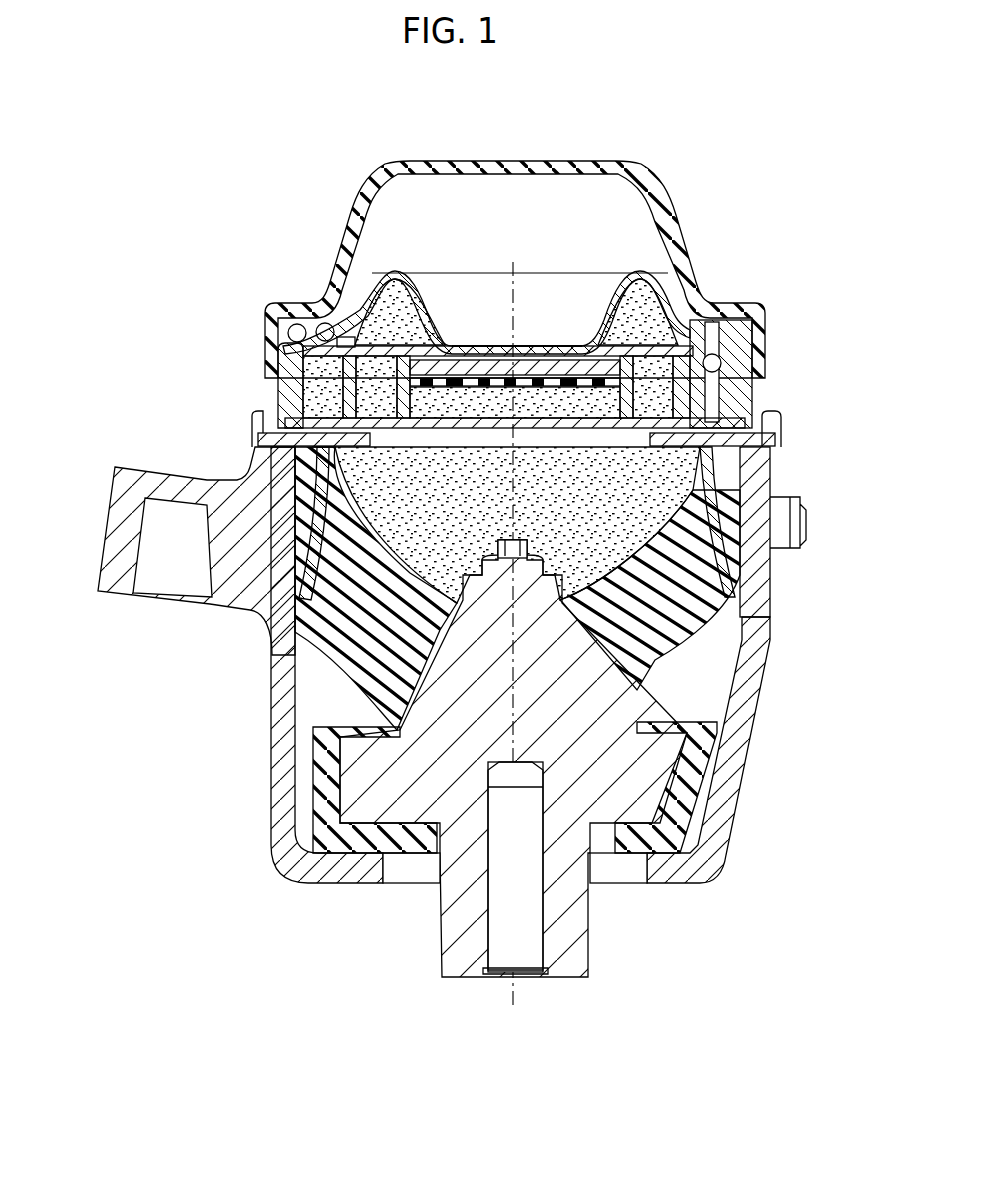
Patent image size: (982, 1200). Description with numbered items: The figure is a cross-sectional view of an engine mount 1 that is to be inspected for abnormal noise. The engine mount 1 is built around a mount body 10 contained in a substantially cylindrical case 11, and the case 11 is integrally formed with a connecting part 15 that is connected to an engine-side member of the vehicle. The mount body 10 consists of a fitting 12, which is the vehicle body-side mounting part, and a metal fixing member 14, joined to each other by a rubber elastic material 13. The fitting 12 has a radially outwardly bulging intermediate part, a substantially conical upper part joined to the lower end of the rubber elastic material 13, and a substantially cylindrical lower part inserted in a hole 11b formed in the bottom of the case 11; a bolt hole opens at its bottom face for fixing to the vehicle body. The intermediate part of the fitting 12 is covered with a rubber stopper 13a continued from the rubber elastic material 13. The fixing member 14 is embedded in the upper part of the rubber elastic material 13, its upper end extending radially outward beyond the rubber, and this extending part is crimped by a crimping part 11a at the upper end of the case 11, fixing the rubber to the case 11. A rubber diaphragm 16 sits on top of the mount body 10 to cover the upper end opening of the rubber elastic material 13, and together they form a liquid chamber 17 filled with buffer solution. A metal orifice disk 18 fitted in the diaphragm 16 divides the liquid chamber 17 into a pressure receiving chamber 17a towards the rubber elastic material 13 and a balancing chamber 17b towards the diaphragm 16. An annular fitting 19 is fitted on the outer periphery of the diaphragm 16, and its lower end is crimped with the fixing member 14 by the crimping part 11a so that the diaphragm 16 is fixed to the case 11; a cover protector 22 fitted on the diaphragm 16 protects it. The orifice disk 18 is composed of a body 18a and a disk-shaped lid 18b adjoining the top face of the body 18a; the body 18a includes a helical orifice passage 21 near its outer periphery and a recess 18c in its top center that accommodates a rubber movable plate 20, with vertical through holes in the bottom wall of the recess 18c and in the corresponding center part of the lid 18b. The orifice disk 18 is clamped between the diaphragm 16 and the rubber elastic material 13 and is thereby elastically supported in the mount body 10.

The engine mount 1 is at (282, 192).
The mount body 10 is at (700, 648).
The case 11 is at (270, 758).
The crimping part 11a is at (262, 440).
The hole 11b is at (637, 868).
The fitting 12 is at (438, 938).
The rubber elastic material 13 is at (355, 640).
The rubber stopper 13a is at (700, 763).
The fixing member 14 is at (300, 541).
The connecting part 15 is at (100, 531).
The diaphragm 16 is at (413, 284).
The liquid chamber 17 is at (607, 542).
The pressure receiving chamber 17a is at (528, 483).
The balancing chamber 17b is at (655, 338).
The orifice disk 18 is at (652, 442).
The body 18a is at (400, 431).
The lid 18b is at (578, 345).
The recess 18c is at (425, 332).
The annular fitting 19 is at (755, 397).
The movable plate 20 is at (488, 360).
The orifice passage 21 is at (312, 393).
The cover protector 22 is at (585, 162).